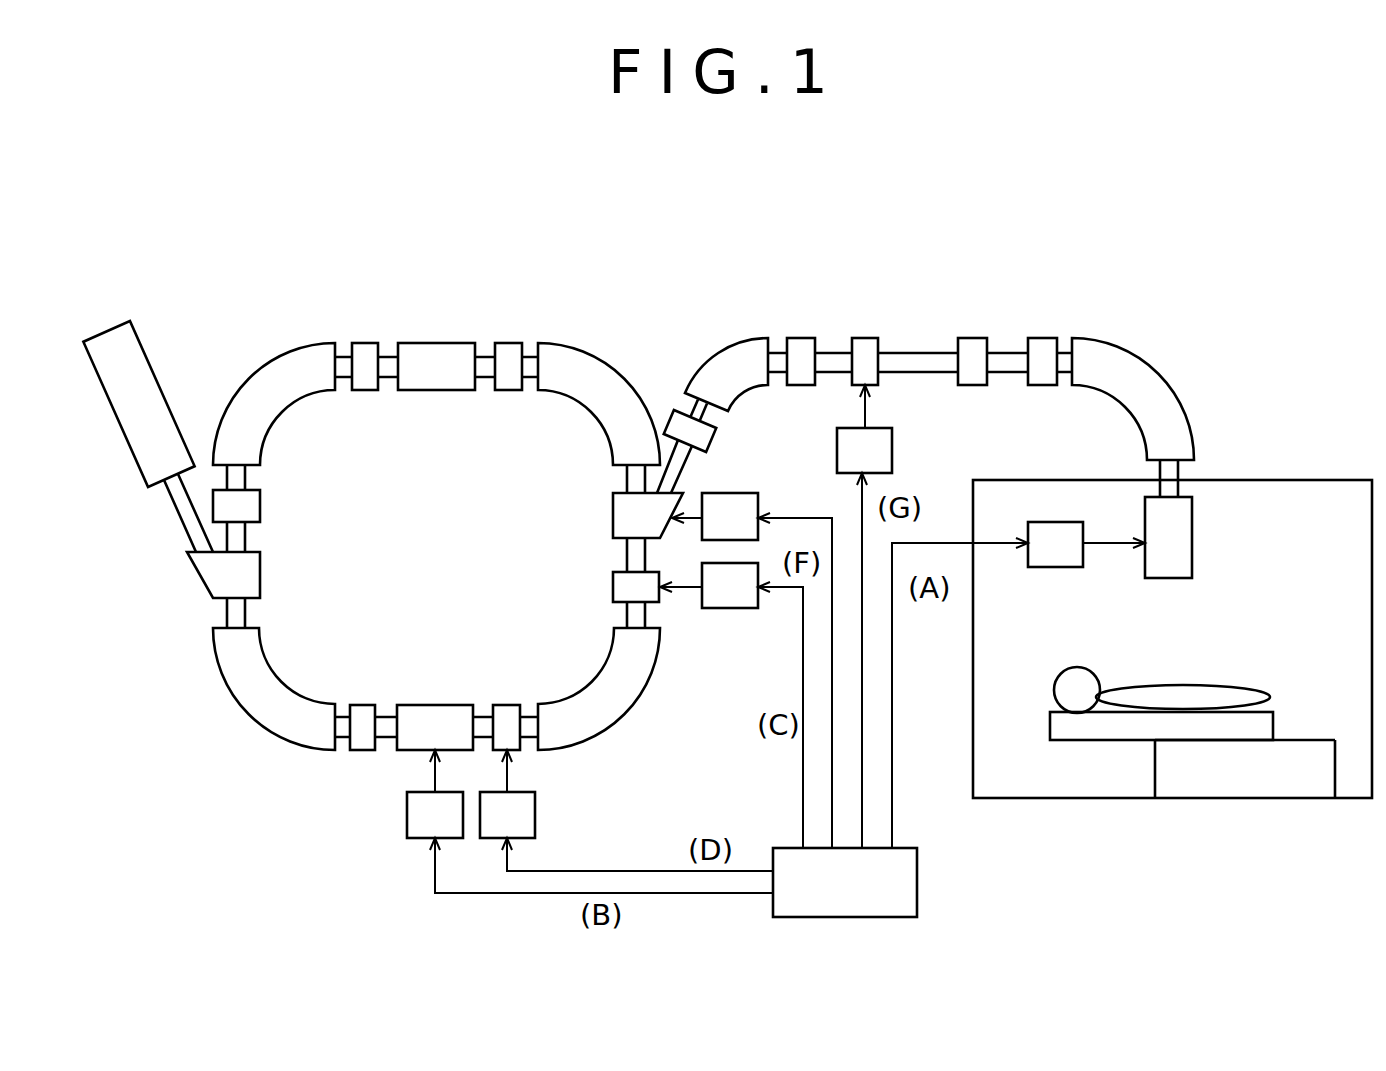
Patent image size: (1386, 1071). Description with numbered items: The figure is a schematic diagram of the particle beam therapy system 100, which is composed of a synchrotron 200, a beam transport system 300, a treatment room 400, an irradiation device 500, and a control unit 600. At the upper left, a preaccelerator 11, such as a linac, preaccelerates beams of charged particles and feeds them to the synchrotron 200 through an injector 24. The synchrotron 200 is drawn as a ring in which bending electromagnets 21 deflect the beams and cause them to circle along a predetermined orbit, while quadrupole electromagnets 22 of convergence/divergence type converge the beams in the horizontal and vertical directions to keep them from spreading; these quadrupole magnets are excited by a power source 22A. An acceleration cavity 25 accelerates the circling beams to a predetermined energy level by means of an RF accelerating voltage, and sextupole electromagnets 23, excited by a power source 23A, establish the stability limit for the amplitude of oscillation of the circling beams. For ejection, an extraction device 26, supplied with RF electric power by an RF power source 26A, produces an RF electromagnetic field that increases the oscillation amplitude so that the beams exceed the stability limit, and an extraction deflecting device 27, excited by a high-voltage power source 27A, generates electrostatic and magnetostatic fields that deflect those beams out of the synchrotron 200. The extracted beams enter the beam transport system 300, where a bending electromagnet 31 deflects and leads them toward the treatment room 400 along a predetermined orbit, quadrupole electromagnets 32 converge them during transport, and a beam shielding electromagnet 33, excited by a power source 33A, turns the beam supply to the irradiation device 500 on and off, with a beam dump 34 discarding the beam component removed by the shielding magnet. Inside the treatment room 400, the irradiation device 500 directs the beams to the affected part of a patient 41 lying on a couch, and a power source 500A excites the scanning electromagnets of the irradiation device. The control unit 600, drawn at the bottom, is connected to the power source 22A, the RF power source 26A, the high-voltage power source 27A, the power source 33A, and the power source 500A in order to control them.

The particle beam therapy system 100 is at (648, 247).
The preaccelerator 11 is at (138, 325).
The synchrotron 200 is at (202, 747).
The bending electromagnets 21 is at (287, 362).
The quadrupole electromagnets 22 is at (510, 343).
The sextupole electromagnets 23 is at (366, 343).
The injector 24 is at (262, 568).
The acceleration cavity 25 is at (442, 343).
The extraction device 26 is at (428, 705).
The extraction deflecting device 27 is at (612, 500).
The high-voltage power source 27A is at (740, 493).
The power source 22A is at (723, 608).
The power source 23A is at (535, 808).
The RF power source 26A is at (396, 806).
The beam transport system 300 is at (925, 287).
The bending electromagnet 31 is at (1155, 370).
The quadrupole electromagnets 32 is at (1042, 338).
The beam shielding electromagnet 33 is at (865, 338).
The beam dump 34 is at (972, 338).
The power source 33A is at (892, 445).
The treatment room 400 is at (1240, 480).
The irradiation device 500 is at (1192, 535).
The power source 500A is at (1053, 567).
The patient 41 is at (1210, 692).
The control unit 600 is at (917, 878).